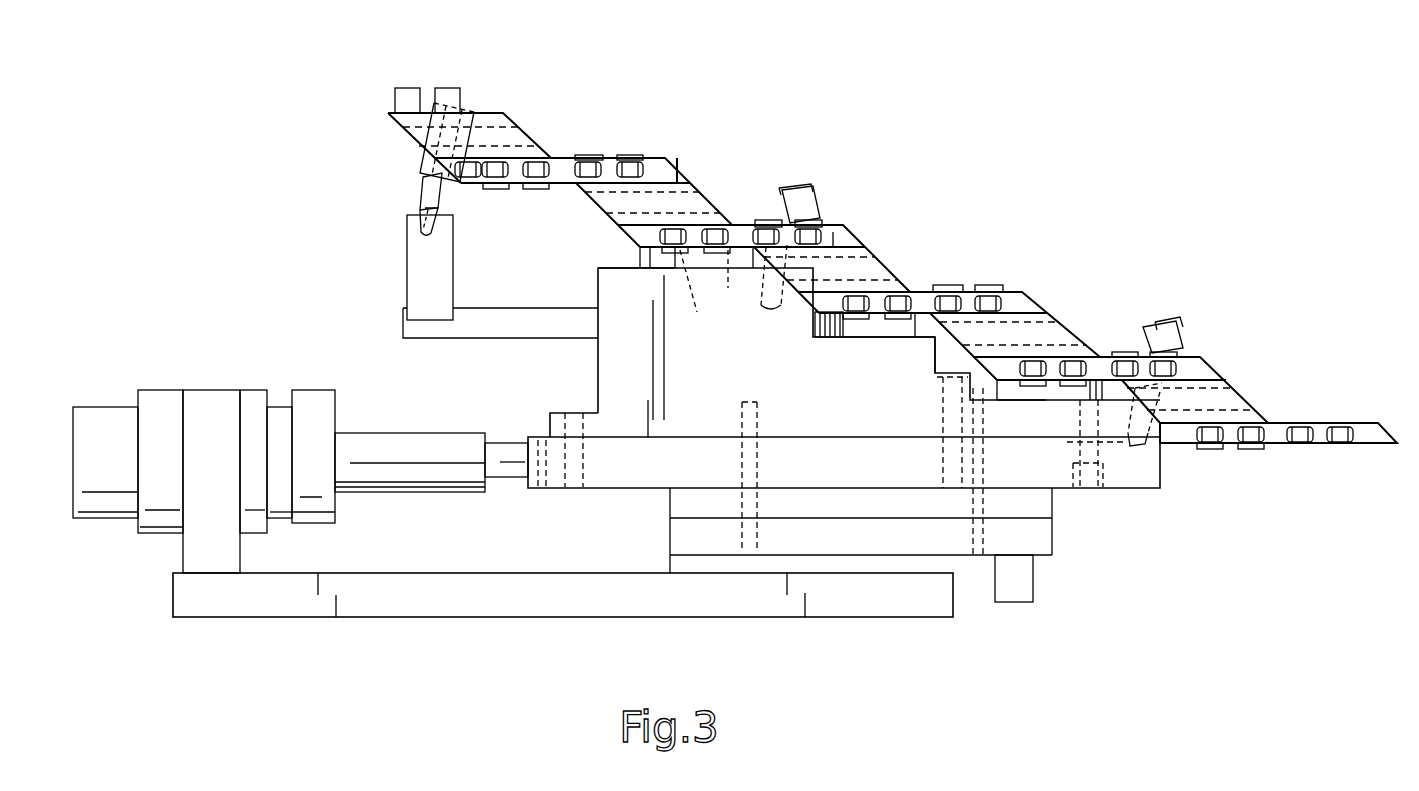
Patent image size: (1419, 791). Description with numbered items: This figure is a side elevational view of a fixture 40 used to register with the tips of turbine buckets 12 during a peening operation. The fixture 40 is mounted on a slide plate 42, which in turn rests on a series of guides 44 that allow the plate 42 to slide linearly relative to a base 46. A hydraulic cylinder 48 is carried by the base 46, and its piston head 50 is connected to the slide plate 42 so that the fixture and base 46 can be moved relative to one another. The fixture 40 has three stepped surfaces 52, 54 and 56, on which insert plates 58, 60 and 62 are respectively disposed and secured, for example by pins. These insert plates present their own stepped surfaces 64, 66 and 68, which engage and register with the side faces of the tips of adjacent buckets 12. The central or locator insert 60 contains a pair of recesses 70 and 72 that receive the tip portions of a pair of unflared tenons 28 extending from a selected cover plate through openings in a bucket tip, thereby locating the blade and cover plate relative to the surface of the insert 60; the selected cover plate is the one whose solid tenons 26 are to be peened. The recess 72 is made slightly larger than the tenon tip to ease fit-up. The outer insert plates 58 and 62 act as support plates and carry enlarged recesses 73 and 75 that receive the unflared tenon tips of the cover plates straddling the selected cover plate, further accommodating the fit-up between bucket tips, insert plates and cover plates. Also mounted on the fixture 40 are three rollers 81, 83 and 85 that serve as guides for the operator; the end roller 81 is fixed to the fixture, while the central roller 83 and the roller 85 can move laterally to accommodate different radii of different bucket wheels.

The bucket 12 is at (573, 156).
The solid tenon 26 is at (455, 88).
The unflared tenon 28 is at (503, 189).
The fixture 40 is at (612, 363).
The slide plate 42 is at (628, 465).
The guides 44 is at (1040, 537).
The base 46 is at (890, 597).
The hydraulic cylinder 48 is at (158, 418).
The piston head 50 is at (503, 450).
The stepped surface 52 is at (632, 240).
The stepped surface 54 is at (917, 332).
The stepped surface 56 is at (1052, 400).
The insert plate 58 is at (672, 266).
The insert plate 60 is at (876, 326).
The insert plate 62 is at (1020, 392).
The stepped surface 64 is at (753, 247).
The stepped surface 66 is at (833, 232).
The stepped surface 68 is at (998, 400).
The recess 70 is at (897, 318).
The recess 72 is at (851, 318).
The enlarged recess 73 is at (727, 283).
The enlarged recess 75 is at (694, 293).
The end roller 81 is at (422, 160).
The central roller 83 is at (795, 188).
The roller 85 is at (1157, 323).